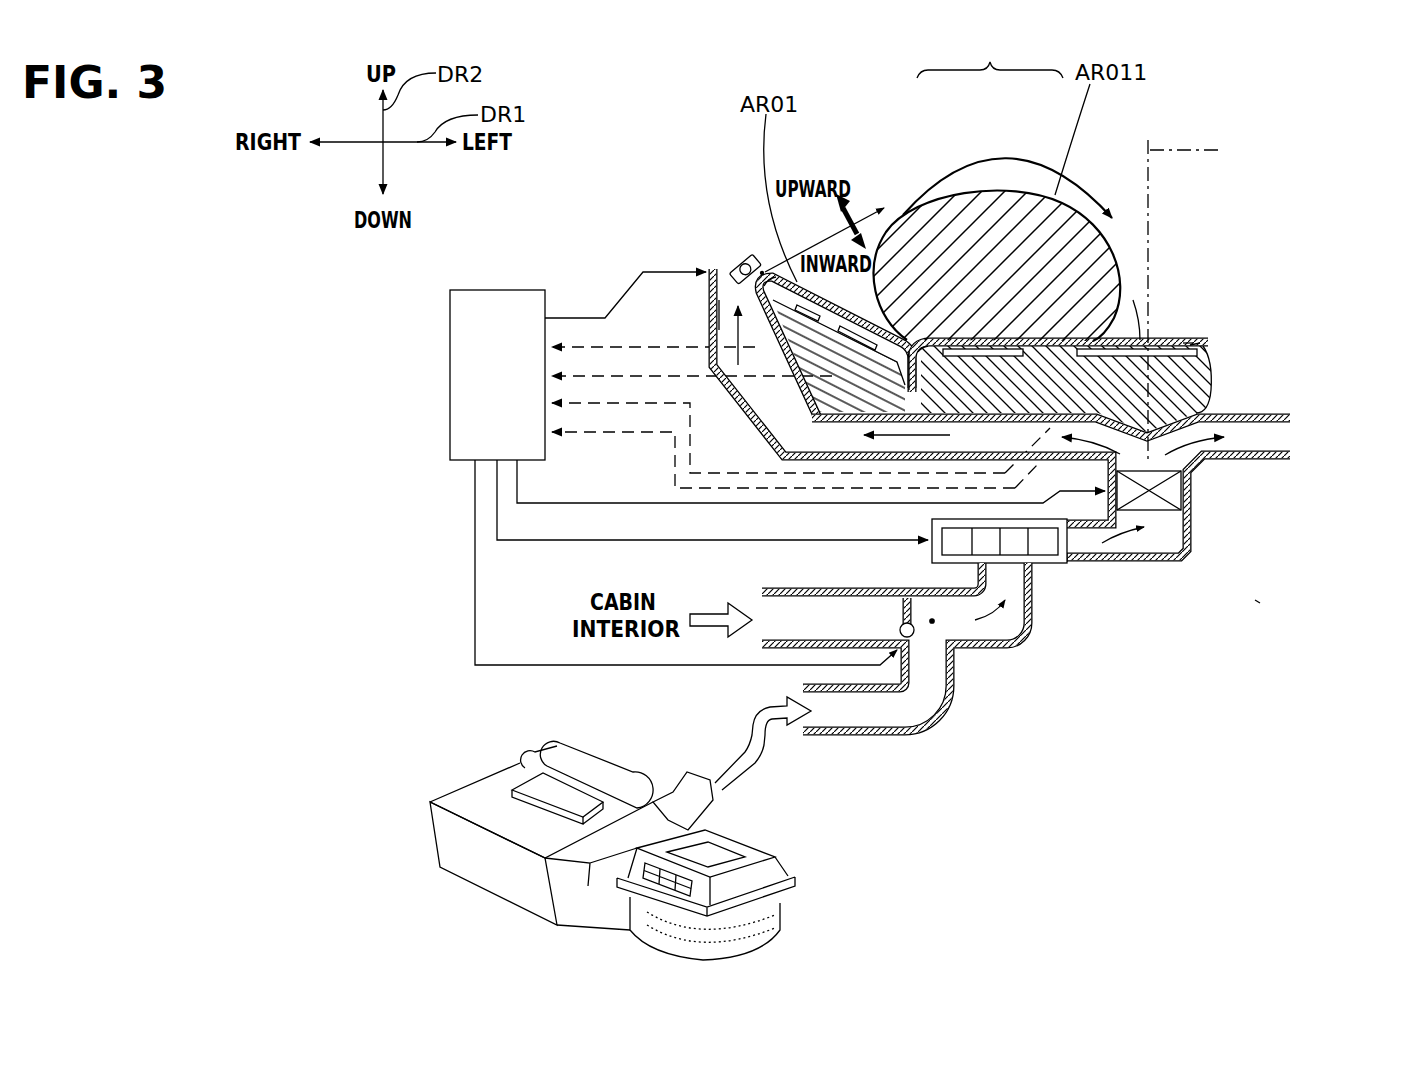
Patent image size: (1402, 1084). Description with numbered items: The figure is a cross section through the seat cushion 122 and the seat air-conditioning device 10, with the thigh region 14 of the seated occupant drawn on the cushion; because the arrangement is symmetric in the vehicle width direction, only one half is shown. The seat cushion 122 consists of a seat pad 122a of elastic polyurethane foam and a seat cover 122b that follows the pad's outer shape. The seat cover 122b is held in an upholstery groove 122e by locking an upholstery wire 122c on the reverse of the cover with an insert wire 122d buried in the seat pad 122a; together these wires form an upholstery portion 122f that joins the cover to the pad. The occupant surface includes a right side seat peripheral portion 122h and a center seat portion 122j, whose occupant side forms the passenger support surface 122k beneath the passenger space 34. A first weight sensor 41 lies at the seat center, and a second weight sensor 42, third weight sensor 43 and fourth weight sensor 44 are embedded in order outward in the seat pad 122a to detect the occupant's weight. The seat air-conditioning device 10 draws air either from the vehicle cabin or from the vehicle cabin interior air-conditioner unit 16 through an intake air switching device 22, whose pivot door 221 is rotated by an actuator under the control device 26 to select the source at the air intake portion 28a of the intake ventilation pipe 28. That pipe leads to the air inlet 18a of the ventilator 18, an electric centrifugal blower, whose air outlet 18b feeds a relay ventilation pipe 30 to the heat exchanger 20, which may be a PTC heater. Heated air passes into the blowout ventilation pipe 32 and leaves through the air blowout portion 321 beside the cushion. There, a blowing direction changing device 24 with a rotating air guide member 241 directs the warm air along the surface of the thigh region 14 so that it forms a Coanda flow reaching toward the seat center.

The seat air-conditioning device 10 is at (1262, 602).
The thigh region 14 is at (1072, 243).
The vehicle cabin interior air-conditioner unit 16 is at (475, 877).
The ventilator 18 is at (1050, 571).
The air inlet 18a is at (1012, 570).
The air outlet 18b is at (1070, 547).
The heat exchanger 20 is at (1172, 492).
The intake air switching device 22 is at (893, 620).
The pivot door 221 is at (896, 620).
The blowing direction changing device 24 is at (734, 266).
The air guide member 241 is at (730, 264).
The control device 26 is at (468, 300).
The intake ventilation pipe 28 is at (1003, 646).
The air intake portion 28a is at (934, 626).
The relay ventilation pipe 30 is at (1163, 560).
The blowout ventilation pipe 32 is at (748, 418).
The air blowout portion 321 is at (758, 284).
The passenger space 34 is at (1124, 137).
The first weight sensor 41 is at (1140, 335).
The second weight sensor 42 is at (1075, 178).
The third weight sensor 43 is at (911, 375).
The fourth weight sensor 44 is at (762, 262).
The seat cushion 122 is at (1268, 348).
The seat pad 122a is at (1190, 373).
The seat cover 122b is at (1215, 340).
The upholstery wire 122c is at (978, 349).
The insert wire 122d is at (1005, 349).
The upholstery groove 122e is at (921, 345).
The upholstery portion 122f is at (990, 60).
The right side seat peripheral portion 122h is at (860, 306).
The center seat portion 122j is at (1192, 344).
The passenger support surface 122k is at (1185, 335).